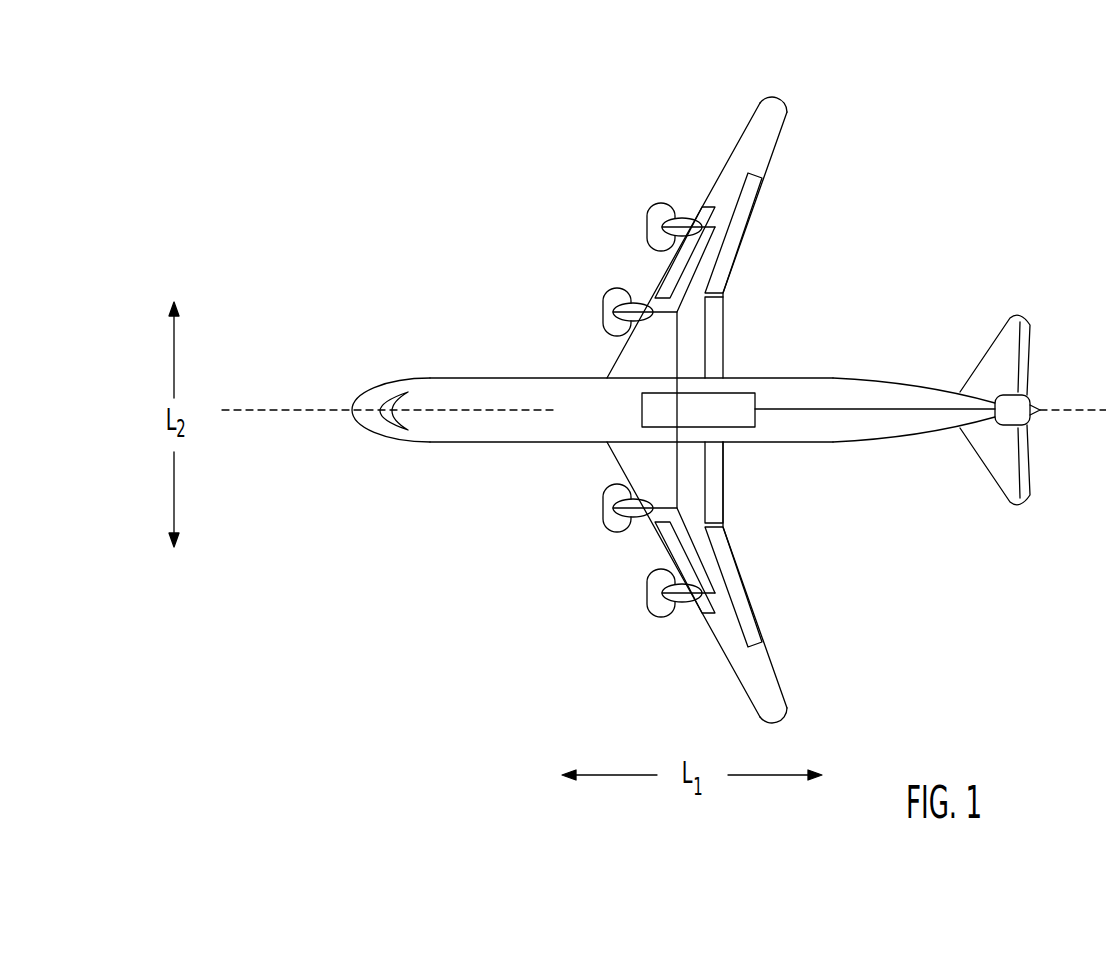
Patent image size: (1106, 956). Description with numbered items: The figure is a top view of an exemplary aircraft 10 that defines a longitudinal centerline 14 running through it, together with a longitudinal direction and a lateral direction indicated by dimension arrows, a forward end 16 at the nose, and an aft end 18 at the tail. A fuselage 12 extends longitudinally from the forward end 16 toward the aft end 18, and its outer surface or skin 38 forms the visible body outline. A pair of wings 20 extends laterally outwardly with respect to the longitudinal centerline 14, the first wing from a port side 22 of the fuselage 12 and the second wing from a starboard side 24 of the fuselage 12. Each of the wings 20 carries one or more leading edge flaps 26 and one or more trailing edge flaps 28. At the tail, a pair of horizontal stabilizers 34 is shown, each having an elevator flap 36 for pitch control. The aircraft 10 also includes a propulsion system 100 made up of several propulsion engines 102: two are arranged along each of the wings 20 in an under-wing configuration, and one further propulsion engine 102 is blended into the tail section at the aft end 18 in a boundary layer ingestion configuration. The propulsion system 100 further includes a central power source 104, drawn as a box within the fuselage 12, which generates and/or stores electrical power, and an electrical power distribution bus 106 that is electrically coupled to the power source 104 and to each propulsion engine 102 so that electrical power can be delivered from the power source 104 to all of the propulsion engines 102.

The aircraft 10 is at (468, 78).
The fuselage 12 is at (525, 377).
The longitudinal centerline 14 is at (290, 407).
The forward end 16 is at (372, 459).
The aft end 18 is at (967, 312).
The wings 20 is at (753, 127).
The port side 22 is at (572, 606).
The starboard side 24 is at (593, 137).
The leading edge flaps 26 is at (662, 280).
The trailing edge flaps 28 is at (715, 331).
The horizontal stabilizers 34 is at (1012, 317).
The elevator flap 36 is at (1022, 366).
The outer surface or skin 38 is at (542, 454).
The propulsion system 100 is at (839, 491).
The propulsion engines 102 is at (660, 203).
The power source 104 is at (740, 404).
The electrical power distribution bus 106 is at (710, 264).